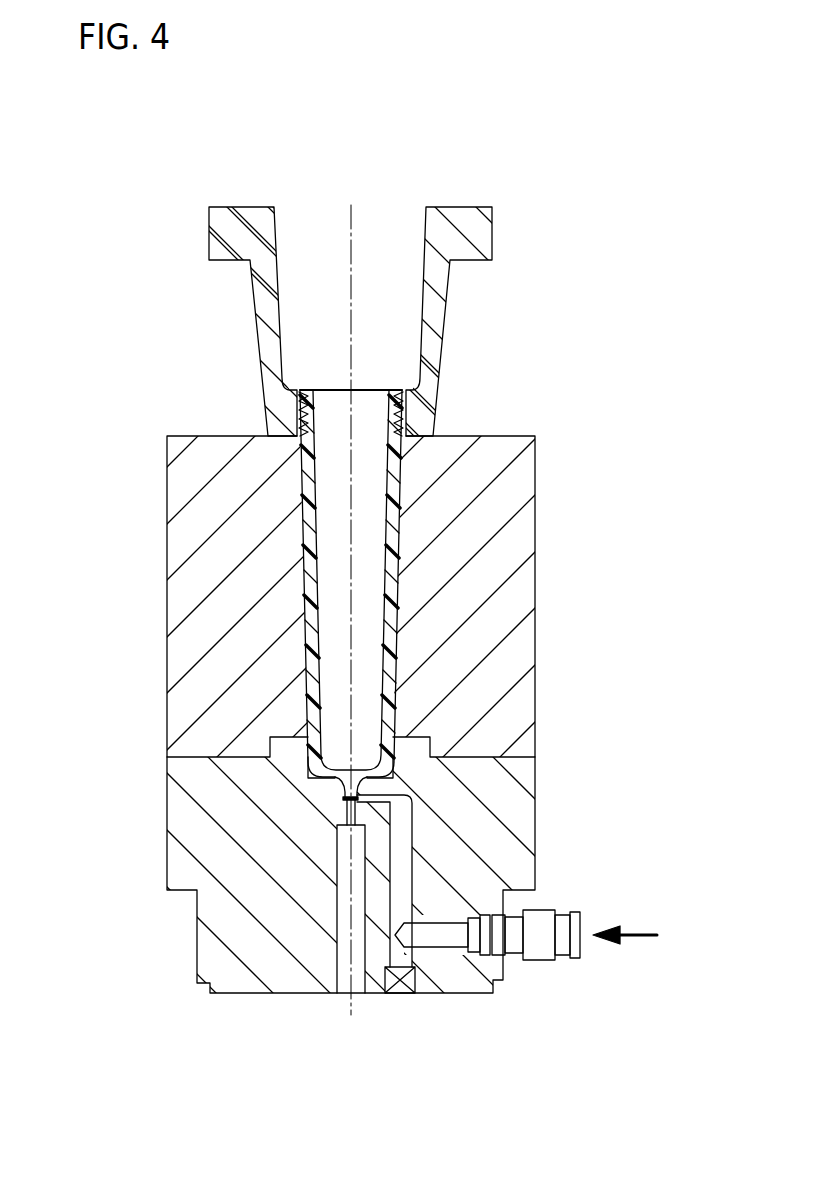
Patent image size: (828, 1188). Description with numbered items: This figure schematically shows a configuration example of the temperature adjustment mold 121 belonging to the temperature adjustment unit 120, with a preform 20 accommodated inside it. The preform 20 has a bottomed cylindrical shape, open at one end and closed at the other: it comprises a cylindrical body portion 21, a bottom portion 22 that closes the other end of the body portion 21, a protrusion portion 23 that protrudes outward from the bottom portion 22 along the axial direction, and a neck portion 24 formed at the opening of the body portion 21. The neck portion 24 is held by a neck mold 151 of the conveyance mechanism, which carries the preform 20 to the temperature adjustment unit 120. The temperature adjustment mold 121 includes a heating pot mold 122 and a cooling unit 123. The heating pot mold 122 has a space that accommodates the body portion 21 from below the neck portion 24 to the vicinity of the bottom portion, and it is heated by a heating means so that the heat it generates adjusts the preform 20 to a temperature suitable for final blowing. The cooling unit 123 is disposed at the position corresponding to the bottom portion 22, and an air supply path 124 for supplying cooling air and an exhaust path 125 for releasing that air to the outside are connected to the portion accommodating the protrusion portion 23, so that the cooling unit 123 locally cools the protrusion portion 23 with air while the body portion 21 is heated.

The temperature adjustment unit 120 is at (636, 192).
The temperature adjustment mold 121 is at (543, 463).
The heating pot mold 122 is at (536, 523).
The cooling unit 123 is at (164, 875).
The air supply path 124 is at (401, 848).
The exhaust path 125 is at (334, 933).
The neck mold 151 is at (448, 288).
The preform 20 is at (288, 528).
The body portion 21 is at (393, 598).
The bottom portion 22 is at (341, 792).
The protrusion portion 23 is at (340, 792).
The neck portion 24 is at (298, 410).